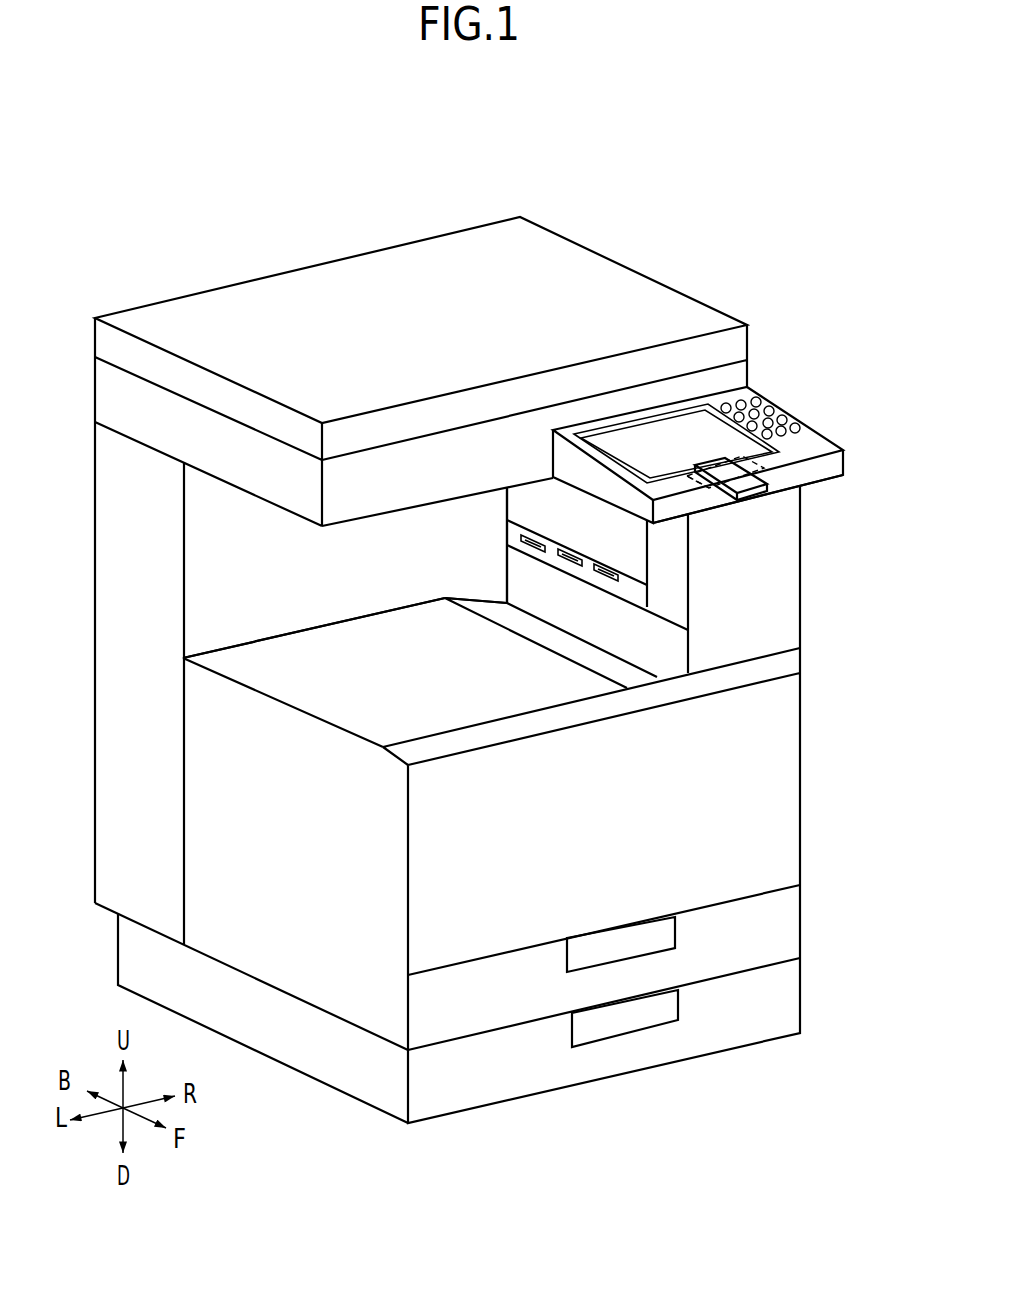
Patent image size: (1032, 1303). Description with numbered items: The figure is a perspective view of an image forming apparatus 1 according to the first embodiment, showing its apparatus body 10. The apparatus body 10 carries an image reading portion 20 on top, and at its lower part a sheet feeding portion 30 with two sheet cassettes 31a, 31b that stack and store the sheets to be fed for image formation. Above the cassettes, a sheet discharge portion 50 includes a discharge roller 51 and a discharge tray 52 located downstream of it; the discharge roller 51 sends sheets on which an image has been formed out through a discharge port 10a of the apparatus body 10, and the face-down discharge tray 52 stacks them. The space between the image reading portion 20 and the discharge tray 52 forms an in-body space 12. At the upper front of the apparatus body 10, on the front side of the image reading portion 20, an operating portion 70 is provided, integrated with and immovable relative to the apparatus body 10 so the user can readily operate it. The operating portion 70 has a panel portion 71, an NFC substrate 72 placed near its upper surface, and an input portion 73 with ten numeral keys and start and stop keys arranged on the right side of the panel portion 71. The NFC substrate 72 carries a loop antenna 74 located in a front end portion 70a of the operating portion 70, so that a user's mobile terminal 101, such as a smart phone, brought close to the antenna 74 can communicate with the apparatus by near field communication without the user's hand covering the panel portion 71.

The image forming apparatus 1 is at (283, 203).
The image reading portion 20 is at (667, 270).
The apparatus body 10 is at (499, 720).
The discharge port 10a is at (527, 567).
The in-body space 12 is at (210, 609).
The sheet feeding portion 30 is at (511, 971).
The sheet cassette 31a is at (790, 927).
The sheet cassette 31b is at (790, 1009).
The sheet discharge portion 50 is at (314, 663).
The discharge roller 51 is at (549, 541).
The discharge tray 52 is at (412, 632).
The operating portion 70 is at (729, 455).
The front end portion 70a is at (800, 477).
The panel portion 71 is at (672, 430).
The NFC substrate 72 is at (691, 490).
The antenna 74 is at (713, 540).
The input portion 73 is at (760, 393).
The mobile terminal 101 is at (743, 487).